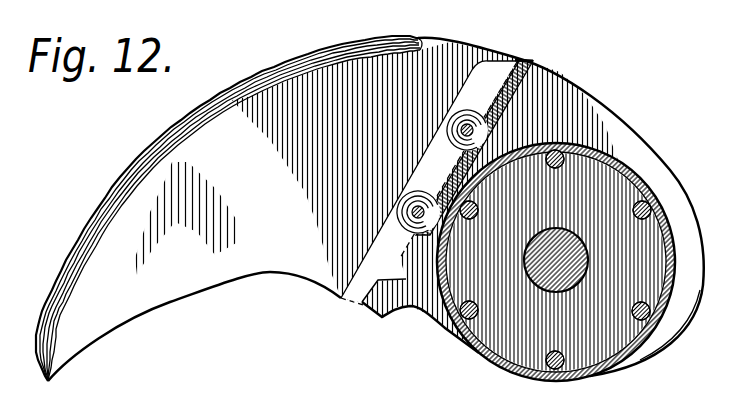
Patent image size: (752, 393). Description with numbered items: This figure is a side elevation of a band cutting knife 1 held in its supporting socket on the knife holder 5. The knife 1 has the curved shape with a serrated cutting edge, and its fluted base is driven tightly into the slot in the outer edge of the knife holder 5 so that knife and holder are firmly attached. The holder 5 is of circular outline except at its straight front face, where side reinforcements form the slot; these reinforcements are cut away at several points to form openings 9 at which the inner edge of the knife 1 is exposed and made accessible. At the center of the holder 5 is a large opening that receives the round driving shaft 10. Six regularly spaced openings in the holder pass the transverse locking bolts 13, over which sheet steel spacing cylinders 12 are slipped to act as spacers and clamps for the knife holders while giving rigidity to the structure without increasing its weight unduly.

The band cutting knife 1 is at (277, 65).
The knife holder 5 is at (625, 115).
The opening 9 is at (416, 203).
The driving shaft 10 is at (556, 260).
The spacing cylinder 12 is at (618, 163).
The bolt 13 is at (651, 211).